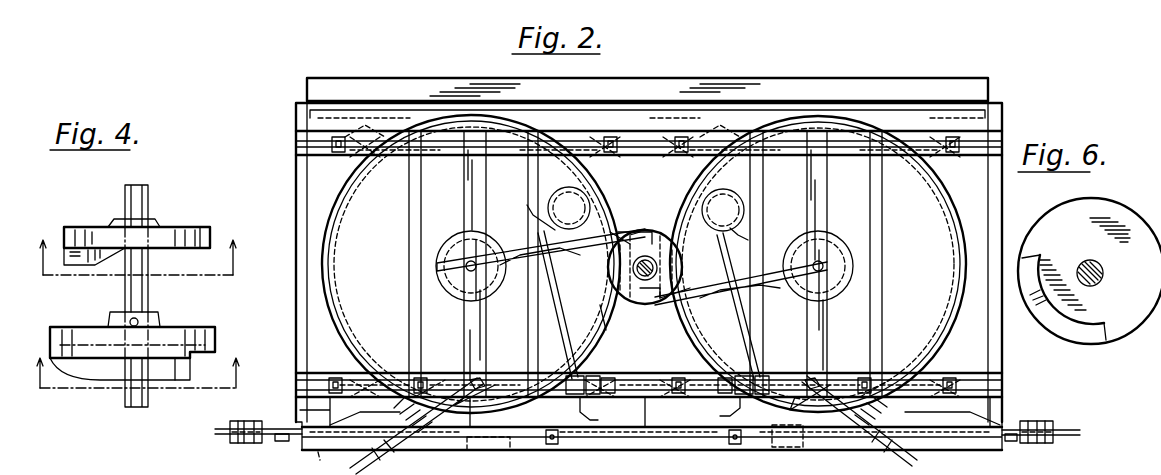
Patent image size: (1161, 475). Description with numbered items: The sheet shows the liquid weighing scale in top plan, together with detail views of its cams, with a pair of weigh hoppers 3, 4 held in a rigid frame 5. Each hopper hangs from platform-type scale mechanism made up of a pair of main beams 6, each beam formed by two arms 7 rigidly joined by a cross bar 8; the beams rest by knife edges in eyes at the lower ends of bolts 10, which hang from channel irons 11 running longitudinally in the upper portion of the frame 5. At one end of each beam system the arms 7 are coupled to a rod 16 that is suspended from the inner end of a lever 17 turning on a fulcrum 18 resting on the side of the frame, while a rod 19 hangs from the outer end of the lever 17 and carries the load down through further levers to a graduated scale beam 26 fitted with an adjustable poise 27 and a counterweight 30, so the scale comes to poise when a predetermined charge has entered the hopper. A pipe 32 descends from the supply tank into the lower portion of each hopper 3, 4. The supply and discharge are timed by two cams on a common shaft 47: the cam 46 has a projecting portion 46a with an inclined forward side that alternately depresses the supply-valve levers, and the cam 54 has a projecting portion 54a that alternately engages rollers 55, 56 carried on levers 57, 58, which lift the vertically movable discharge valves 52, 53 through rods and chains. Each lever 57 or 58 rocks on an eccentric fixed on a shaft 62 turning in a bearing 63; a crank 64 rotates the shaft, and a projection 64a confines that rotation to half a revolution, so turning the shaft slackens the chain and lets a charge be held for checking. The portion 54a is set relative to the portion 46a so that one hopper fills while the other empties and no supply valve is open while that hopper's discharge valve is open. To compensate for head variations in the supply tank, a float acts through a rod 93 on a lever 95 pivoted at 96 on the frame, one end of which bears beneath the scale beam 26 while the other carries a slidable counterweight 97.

In FIG. 2, the weigh hopper 3 is at (471, 264).
In FIG. 2, the weigh hopper 4 is at (818, 264).
In FIG. 2, the frame 5 is at (698, 84).
In FIG. 4, the frame 5 is at (140, 375).
In FIG. 2, the main beam 6 is at (423, 186).
In FIG. 4, the main beam 6 is at (139, 262).
In FIG. 2, the arm 7 is at (375, 160).
In FIG. 2, the cross bar 8 is at (408, 318).
In FIG. 2, the bolt 10 is at (340, 364).
In FIG. 2, the channel iron 11 is at (296, 147).
In FIG. 2, the rod 16 is at (486, 378).
In FIG. 2, the lever 17 is at (380, 412).
In FIG. 2, the fulcrum 18 is at (400, 405).
In FIG. 2, the rod 19 is at (905, 462).
In FIG. 2, the graduated scale beam 26 is at (562, 438).
In FIG. 2, the poise 27 is at (490, 452).
In FIG. 2, the counterweight 30 is at (395, 450).
In FIG. 2, the pipe 32 is at (583, 190).
In FIG. 4, the cam 46 is at (195, 227).
In FIG. 6, the cam 46 is at (1070, 205).
In FIG. 4, the projecting portion 46a is at (80, 258).
In FIG. 6, the projecting portion 46a is at (1035, 308).
In FIG. 2, the shaft 47 is at (658, 268).
In FIG. 4, the shaft 47 is at (126, 205).
In FIG. 6, the shaft 47 is at (1103, 280).
In FIG. 2, the discharge valve 52 is at (445, 264).
In FIG. 2, the discharge valve 53 is at (832, 268).
In FIG. 2, the cam 54 is at (680, 242).
In FIG. 4, the cam 54 is at (190, 332).
In FIG. 4, the projecting portion 54a is at (180, 380).
In FIG. 2, the roller 55 is at (634, 234).
In FIG. 2, the roller 56 is at (622, 338).
In FIG. 2, the lever 57 is at (598, 262).
In FIG. 2, the lever 58 is at (688, 300).
In FIG. 2, the shaft 62 is at (527, 207).
In FIG. 2, the bearing 63 is at (595, 372).
In FIG. 2, the crank 64 is at (560, 413).
In FIG. 2, the projection 64a is at (775, 356).
In FIG. 2, the rod 93 is at (282, 442).
In FIG. 2, the lever 95 is at (225, 431).
In FIG. 2, the pivot 96 is at (998, 456).
In FIG. 2, the counterweight 97 is at (248, 445).